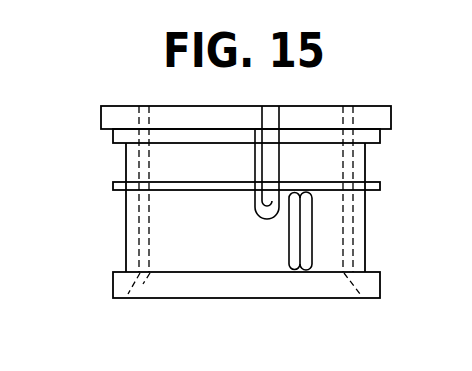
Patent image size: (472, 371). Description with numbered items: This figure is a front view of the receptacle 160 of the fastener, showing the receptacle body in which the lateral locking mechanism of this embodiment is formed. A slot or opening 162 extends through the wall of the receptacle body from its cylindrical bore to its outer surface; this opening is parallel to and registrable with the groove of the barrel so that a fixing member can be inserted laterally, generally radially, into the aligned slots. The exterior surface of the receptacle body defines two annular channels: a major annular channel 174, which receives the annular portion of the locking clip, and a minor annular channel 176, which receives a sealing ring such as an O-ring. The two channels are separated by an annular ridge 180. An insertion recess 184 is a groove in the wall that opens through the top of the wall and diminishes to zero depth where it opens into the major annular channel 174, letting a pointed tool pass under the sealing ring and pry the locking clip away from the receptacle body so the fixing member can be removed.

The receptacle 160 is at (214, 302).
The slot or opening 162 is at (289, 244).
The major annular channel 174 is at (126, 232).
The minor annular channel 176 is at (126, 163).
The annular ridge 180 is at (114, 186).
The insertion recess 184 is at (274, 106).